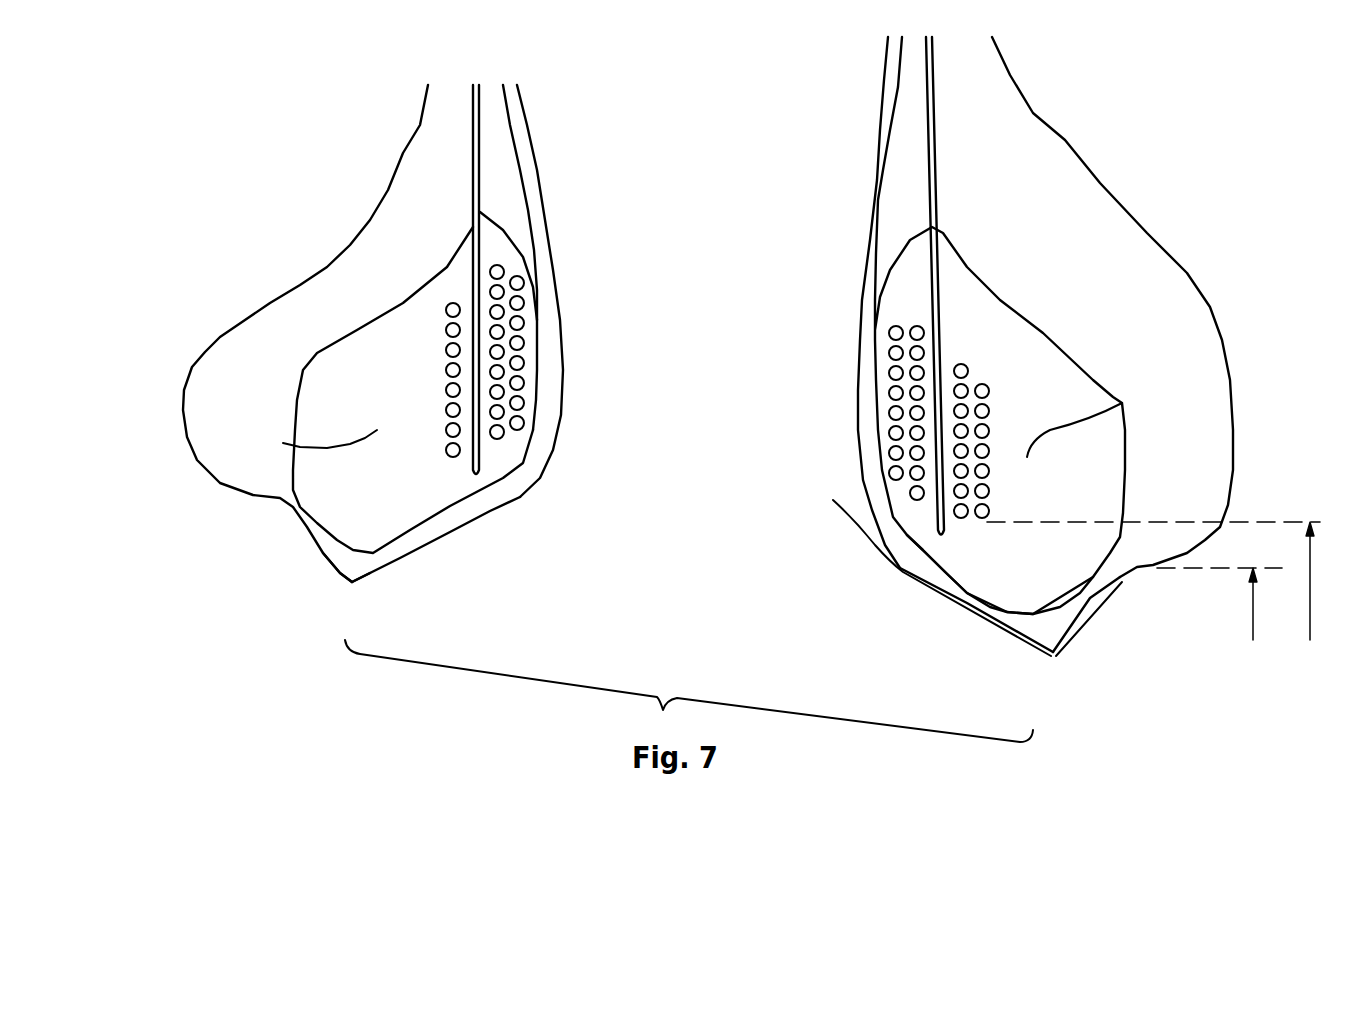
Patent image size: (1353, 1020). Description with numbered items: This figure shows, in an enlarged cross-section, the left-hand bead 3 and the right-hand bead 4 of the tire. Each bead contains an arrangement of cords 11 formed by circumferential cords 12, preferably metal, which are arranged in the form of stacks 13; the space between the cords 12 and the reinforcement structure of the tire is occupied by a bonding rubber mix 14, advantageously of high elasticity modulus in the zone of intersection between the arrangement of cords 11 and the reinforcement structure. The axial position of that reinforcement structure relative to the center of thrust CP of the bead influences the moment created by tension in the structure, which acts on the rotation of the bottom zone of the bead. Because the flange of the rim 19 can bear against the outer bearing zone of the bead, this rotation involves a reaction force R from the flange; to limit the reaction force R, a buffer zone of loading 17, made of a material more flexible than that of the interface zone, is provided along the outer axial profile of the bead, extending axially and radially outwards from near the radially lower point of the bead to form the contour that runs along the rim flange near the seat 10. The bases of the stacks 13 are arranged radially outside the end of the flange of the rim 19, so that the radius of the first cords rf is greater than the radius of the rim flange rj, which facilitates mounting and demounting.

The bead 3 is at (408, 517).
The bead 4 is at (1007, 567).
The seat 10 is at (455, 545).
The arrangement of cords 11 is at (510, 258).
The circumferential cord 12 is at (523, 322).
The stack 13 is at (453, 305).
The bonding rubber mix 14 is at (483, 425).
The zone of loading 17 is at (323, 543).
The rim 19 is at (1153, 570).
The reaction force R is at (1120, 610).
The center of thrust CP is at (1130, 382).
The radius of the rim flange rj is at (1250, 623).
The radius of the first cords rf is at (1307, 600).